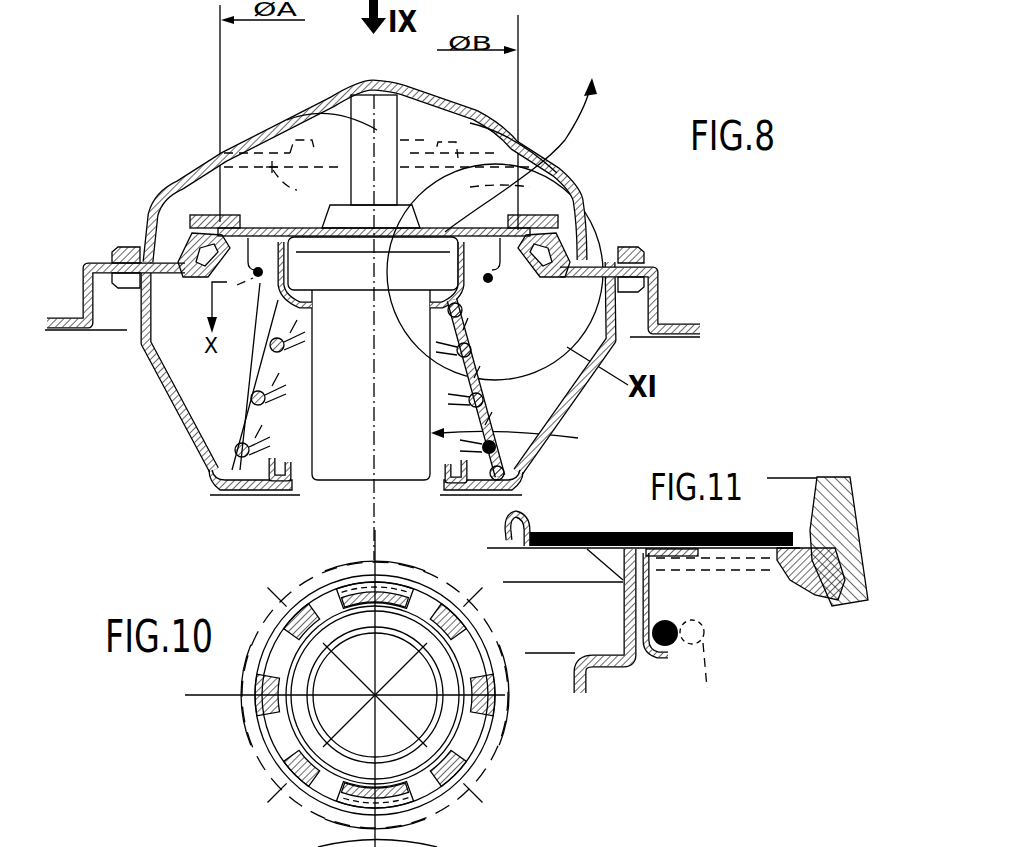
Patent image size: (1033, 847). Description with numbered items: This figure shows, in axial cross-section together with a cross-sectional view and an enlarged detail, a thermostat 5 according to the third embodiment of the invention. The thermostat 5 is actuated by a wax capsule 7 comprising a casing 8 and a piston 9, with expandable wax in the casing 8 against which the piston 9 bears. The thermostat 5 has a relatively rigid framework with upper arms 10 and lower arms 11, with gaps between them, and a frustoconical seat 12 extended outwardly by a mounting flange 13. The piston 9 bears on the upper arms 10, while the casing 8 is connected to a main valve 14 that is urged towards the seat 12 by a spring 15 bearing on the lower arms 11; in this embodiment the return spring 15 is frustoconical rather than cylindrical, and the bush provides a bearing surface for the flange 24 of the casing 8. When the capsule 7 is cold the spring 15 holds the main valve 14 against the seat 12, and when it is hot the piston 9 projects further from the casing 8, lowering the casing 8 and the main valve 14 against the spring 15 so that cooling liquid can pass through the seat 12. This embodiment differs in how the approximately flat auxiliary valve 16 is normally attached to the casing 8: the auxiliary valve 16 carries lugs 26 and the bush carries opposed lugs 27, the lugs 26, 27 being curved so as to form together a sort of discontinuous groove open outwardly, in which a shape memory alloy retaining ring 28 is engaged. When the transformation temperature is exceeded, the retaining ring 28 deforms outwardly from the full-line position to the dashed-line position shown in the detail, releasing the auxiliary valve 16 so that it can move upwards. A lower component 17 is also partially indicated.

In FIG. 8, the thermostat 5 is at (598, 176).
In FIG. 8, the wax capsule 7 is at (505, 441).
In FIG. 8, the casing 8 is at (361, 458).
In FIG. 8, the piston 9 is at (377, 130).
In FIG. 8, the upper arms 10 is at (480, 135).
In FIG. 8, the lower arms 11 is at (173, 400).
In FIG. 8, the frustoconical seat 12 is at (142, 235).
In FIG. 11, the frustoconical seat 12 is at (805, 530).
In FIG. 8, the mounting flange 13 is at (67, 333).
In FIG. 8, the main valve 14 is at (183, 278).
In FIG. 11, the main valve 14 is at (812, 597).
In FIG. 8, the spring 15 is at (253, 401).
In FIG. 8, the auxiliary valve 16 is at (290, 228).
In FIG. 11, the auxiliary valve 16 is at (582, 530).
In FIG. 10, the lower component 17 is at (432, 841).
In FIG. 8, the flange 24 is at (336, 292).
In FIG. 8, the lugs 26 is at (374, 271).
In FIG. 11, the lugs 26 is at (653, 595).
In FIG. 11, the lugs 27 is at (613, 668).
In FIG. 8, the shape memory alloy retaining ring 28 is at (256, 283).
In FIG. 10, the shape memory alloy retaining ring 28 is at (486, 757).
In FIG. 11, the shape memory alloy retaining ring 28 is at (677, 643).